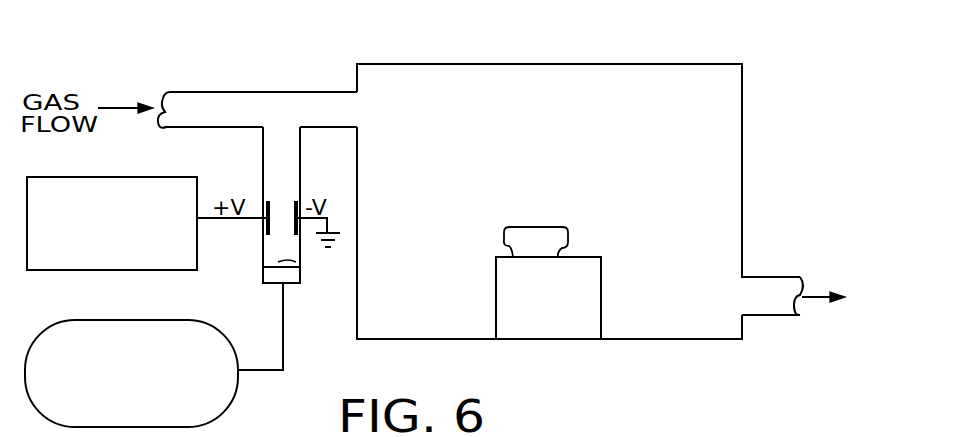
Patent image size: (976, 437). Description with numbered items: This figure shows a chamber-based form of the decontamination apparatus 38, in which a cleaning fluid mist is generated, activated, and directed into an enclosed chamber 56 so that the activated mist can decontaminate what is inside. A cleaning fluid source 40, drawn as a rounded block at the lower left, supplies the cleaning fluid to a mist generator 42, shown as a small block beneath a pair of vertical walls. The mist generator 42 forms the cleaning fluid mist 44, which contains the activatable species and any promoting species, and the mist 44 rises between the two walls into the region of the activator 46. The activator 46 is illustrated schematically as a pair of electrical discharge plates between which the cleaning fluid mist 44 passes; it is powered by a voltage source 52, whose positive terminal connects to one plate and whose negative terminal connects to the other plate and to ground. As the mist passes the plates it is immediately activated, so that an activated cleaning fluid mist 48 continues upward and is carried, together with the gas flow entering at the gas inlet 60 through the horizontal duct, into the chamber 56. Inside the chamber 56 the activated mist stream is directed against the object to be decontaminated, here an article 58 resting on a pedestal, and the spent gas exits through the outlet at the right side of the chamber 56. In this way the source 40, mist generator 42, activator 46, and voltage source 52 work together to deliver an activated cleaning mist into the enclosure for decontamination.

The decontamination apparatus 38 is at (160, 40).
The cleaning fluid source 40 is at (232, 405).
The mist generator 42 is at (262, 269).
The cleaning fluid mist 44 is at (282, 259).
The activator 46 is at (265, 229).
The activated cleaning fluid mist 48 is at (289, 158).
The voltage source 52 is at (168, 178).
The process chamber 56 is at (596, 63).
The workpiece 58 is at (548, 238).
The gas flow inlet 60 is at (114, 107).